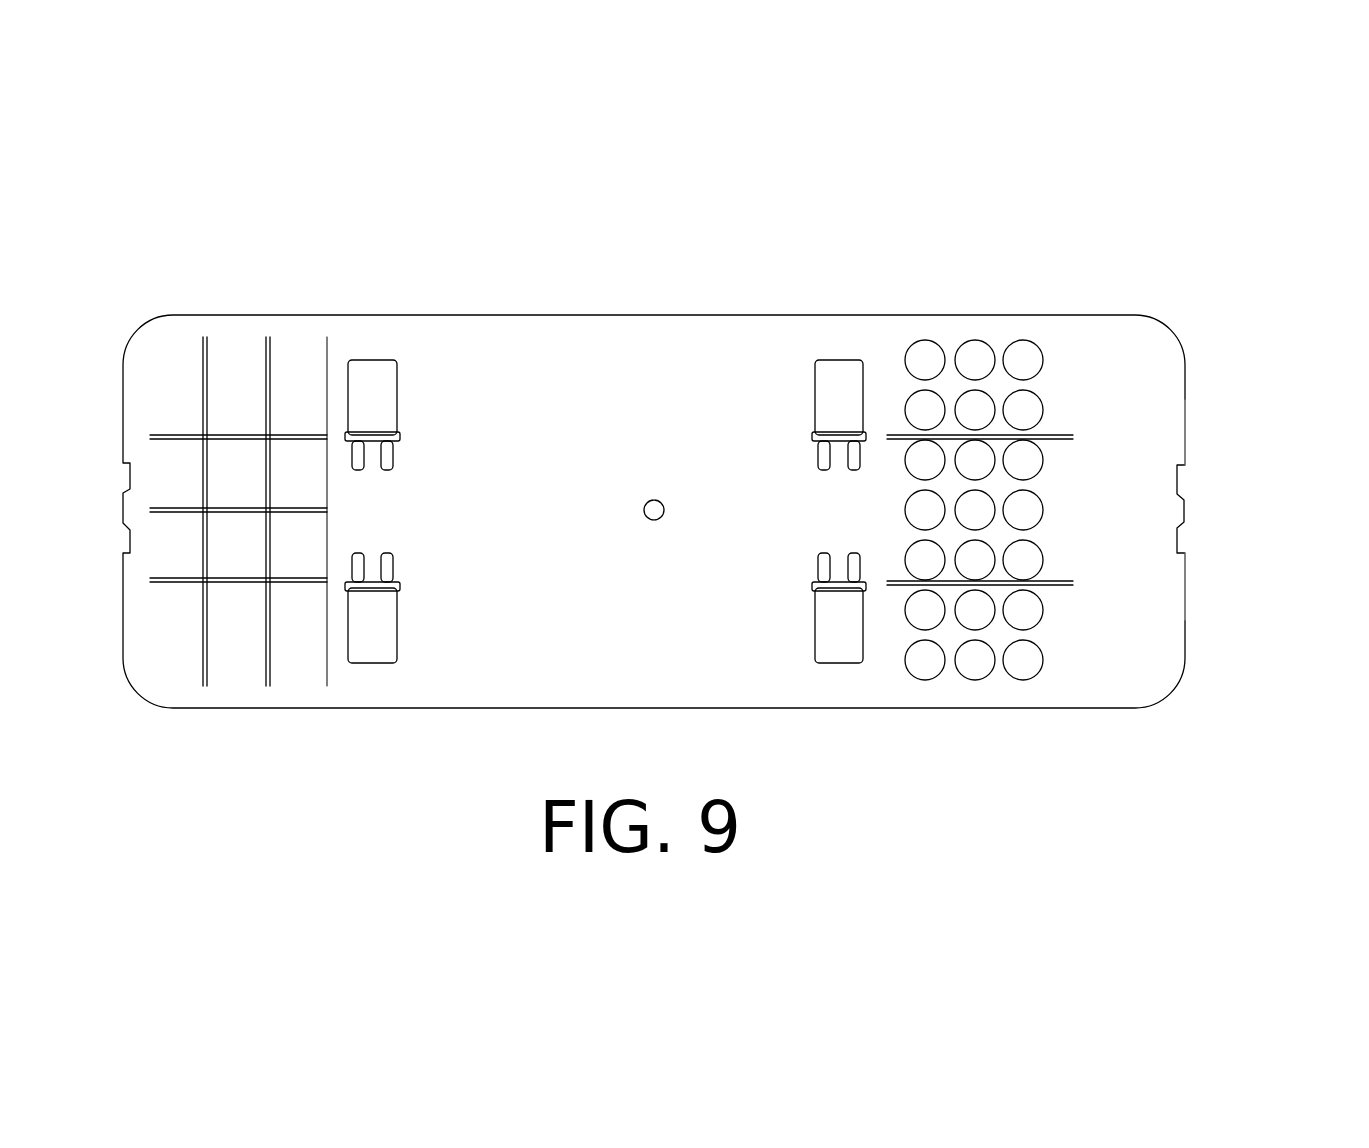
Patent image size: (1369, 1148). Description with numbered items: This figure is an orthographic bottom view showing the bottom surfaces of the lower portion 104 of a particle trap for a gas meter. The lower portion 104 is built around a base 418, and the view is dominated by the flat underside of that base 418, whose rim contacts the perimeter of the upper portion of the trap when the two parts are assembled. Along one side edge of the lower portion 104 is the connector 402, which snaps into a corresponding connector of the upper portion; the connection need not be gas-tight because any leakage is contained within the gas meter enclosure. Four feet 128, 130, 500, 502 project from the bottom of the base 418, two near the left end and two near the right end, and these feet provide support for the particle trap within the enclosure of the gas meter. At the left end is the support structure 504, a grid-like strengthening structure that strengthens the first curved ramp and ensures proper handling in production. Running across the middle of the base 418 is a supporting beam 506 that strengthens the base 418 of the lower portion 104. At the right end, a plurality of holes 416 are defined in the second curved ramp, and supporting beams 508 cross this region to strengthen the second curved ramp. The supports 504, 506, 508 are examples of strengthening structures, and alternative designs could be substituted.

The lower portion 104 is at (1087, 226).
The foot 128 is at (380, 663).
The foot 130 is at (842, 667).
The connector 402 is at (1192, 497).
The plurality of holes 416 is at (1032, 627).
The base 418 is at (553, 567).
The foot 500 is at (370, 360).
The foot 502 is at (840, 357).
The support structure 504 is at (273, 658).
The supporting beam 506 is at (652, 432).
The supporting beams 508 is at (1003, 437).